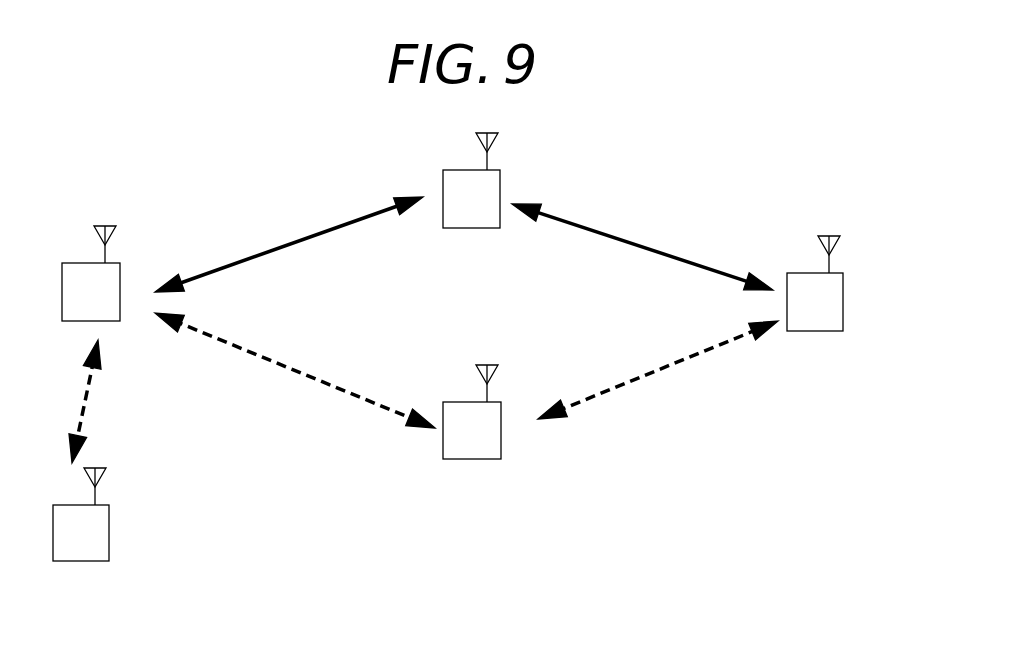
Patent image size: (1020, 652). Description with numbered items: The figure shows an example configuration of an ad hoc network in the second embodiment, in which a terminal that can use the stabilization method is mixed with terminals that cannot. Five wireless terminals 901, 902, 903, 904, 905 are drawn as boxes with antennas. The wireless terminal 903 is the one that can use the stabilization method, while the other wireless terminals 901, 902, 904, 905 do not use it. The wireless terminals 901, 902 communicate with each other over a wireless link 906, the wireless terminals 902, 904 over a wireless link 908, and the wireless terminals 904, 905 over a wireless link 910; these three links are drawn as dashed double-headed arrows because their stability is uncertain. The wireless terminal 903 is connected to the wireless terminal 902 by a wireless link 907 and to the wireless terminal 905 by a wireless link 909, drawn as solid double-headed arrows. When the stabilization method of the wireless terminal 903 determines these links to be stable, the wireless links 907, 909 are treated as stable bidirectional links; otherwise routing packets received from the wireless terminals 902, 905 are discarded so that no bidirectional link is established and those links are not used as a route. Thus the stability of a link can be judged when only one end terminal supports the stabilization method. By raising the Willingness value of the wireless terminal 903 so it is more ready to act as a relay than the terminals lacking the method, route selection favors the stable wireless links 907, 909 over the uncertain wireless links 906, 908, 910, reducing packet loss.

The wireless terminal 901 is at (109, 517).
The wireless terminal 902 is at (120, 277).
The wireless terminal 903 is at (500, 185).
The wireless terminal 904 is at (501, 416).
The wireless terminal 905 is at (843, 288).
The wireless link 906 is at (85, 408).
The wireless link 907 is at (298, 240).
The wireless link 908 is at (293, 370).
The wireless link 909 is at (633, 243).
The wireless link 910 is at (683, 360).